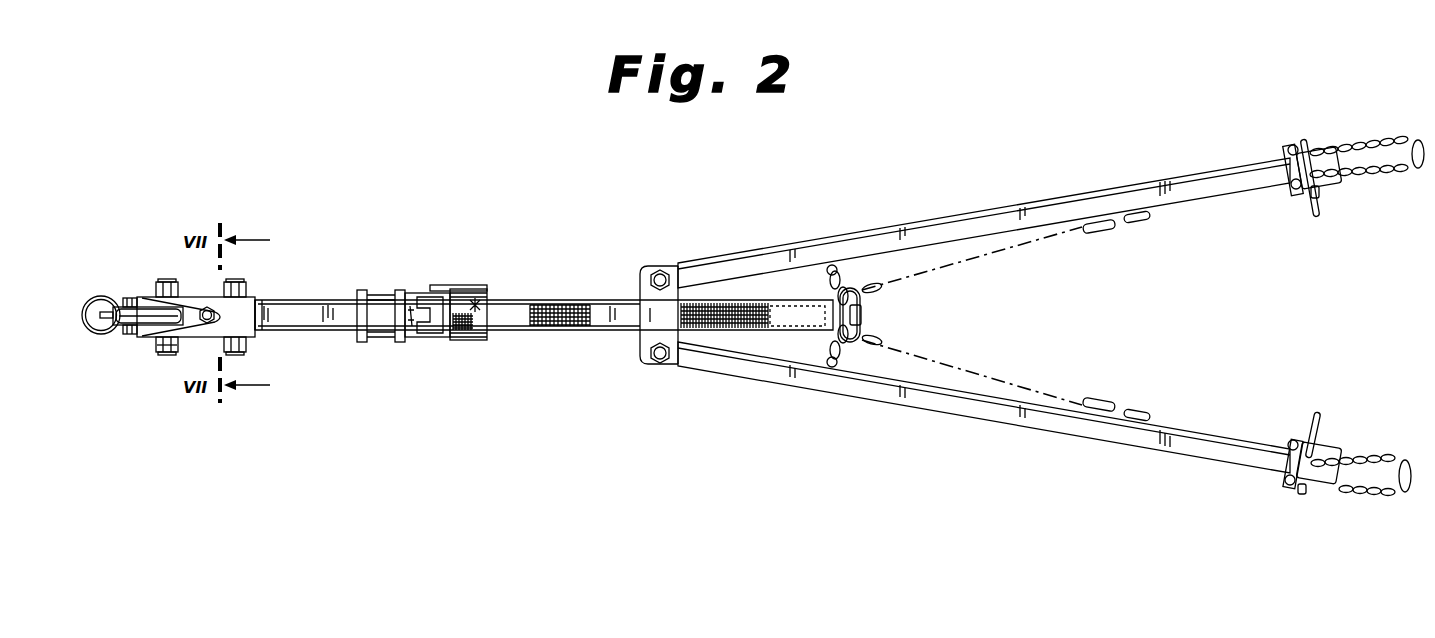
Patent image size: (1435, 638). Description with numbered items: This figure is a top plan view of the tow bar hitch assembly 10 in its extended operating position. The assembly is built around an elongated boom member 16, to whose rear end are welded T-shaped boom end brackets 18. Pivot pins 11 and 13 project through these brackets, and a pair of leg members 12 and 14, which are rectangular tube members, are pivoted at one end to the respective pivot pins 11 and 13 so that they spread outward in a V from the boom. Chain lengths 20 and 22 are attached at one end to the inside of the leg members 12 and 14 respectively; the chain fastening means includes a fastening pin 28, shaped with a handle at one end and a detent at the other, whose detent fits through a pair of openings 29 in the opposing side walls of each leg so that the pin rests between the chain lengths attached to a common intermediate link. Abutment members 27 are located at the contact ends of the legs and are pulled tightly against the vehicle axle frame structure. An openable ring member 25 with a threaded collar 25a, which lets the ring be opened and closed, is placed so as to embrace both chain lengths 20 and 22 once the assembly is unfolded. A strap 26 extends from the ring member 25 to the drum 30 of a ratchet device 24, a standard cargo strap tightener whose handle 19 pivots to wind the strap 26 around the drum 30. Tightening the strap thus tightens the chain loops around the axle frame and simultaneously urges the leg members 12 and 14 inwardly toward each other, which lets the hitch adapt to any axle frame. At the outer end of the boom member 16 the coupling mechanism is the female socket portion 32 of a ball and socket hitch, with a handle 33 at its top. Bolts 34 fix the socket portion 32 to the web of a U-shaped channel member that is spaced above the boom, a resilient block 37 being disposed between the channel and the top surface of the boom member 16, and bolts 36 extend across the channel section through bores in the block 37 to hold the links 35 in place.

The tow bar hitch assembly 10 is at (456, 204).
The pivot pin 11 is at (665, 274).
The leg member 12 is at (990, 220).
The pivot pin 13 is at (660, 361).
The leg member 14 is at (1003, 418).
The boom member 16 is at (546, 332).
The T-shaped boom end bracket 18 is at (641, 290).
The handle 19 is at (396, 305).
The chain length 20 is at (1091, 233).
The chain length 22 is at (1084, 405).
The ratchet device 24 is at (466, 283).
The openable ring member 25 is at (883, 291).
The threaded collar 25a is at (883, 328).
The strap 26 is at (556, 312).
The abutment member 27 is at (1293, 148).
The fastening pin 28 is at (1310, 212).
The opening 29 is at (1320, 194).
The drum 30 is at (479, 299).
The socket portion 32 is at (102, 299).
The handle 33 is at (143, 305).
The bolt 34 is at (207, 309).
The link 35 is at (248, 344).
The bolt 36 is at (168, 353).
The resilient block 37 is at (259, 300).